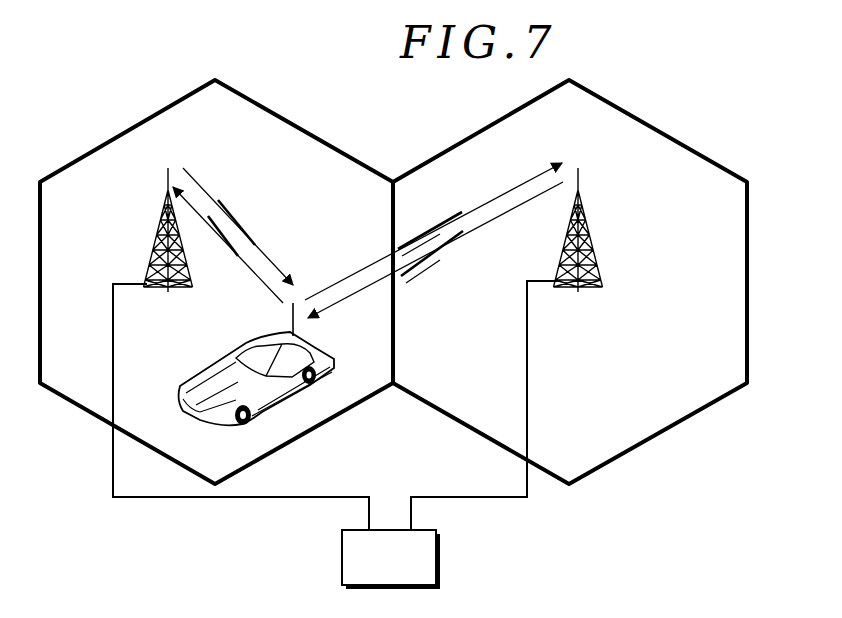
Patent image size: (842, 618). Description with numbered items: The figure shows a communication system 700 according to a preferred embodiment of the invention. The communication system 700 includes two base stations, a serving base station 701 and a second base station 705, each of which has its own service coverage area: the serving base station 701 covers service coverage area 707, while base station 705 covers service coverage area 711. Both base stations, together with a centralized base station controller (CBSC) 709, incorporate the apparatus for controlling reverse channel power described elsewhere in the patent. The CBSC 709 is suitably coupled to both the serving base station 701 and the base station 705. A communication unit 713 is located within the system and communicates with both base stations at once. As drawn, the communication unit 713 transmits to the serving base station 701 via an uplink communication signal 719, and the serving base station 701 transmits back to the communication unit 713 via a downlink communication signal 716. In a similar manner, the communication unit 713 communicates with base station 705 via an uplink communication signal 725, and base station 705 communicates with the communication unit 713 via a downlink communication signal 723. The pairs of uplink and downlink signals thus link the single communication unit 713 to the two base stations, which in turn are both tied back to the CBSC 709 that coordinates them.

The communication system 700 is at (415, 107).
The serving base station 701 is at (158, 241).
The base station 705 is at (597, 245).
The service coverage area 707 is at (240, 141).
The service coverage area 711 is at (592, 141).
The centralized base station controller (CBSC) 709 is at (440, 553).
The communication unit 713 is at (253, 352).
The downlink communication signal 716 is at (240, 222).
The uplink communication signal 719 is at (232, 257).
The downlink communication signal 723 is at (497, 224).
The uplink communication signal 725 is at (505, 194).